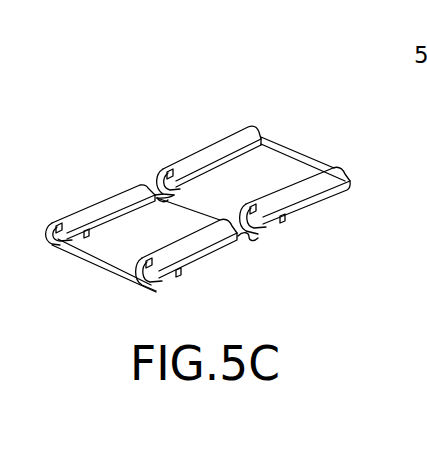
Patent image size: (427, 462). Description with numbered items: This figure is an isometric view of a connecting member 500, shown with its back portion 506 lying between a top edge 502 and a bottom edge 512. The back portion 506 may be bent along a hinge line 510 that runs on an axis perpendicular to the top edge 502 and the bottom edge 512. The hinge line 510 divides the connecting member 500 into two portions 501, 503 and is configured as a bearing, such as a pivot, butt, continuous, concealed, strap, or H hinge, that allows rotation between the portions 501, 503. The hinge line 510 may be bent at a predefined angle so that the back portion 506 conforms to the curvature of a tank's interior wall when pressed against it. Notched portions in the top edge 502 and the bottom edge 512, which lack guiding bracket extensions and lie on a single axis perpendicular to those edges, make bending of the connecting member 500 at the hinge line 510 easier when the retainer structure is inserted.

The connecting member 500 is at (280, 153).
The portion of the connecting member 501 is at (107, 252).
The top edge 502 is at (243, 128).
The portion of the connecting member 503 is at (222, 193).
The back portion 506 is at (262, 182).
The hinge line 510 is at (160, 198).
The bottom edge 512 is at (355, 183).